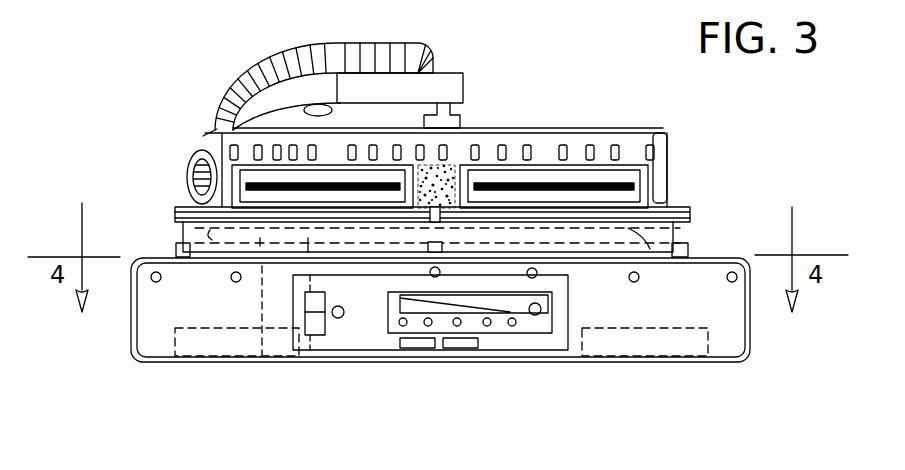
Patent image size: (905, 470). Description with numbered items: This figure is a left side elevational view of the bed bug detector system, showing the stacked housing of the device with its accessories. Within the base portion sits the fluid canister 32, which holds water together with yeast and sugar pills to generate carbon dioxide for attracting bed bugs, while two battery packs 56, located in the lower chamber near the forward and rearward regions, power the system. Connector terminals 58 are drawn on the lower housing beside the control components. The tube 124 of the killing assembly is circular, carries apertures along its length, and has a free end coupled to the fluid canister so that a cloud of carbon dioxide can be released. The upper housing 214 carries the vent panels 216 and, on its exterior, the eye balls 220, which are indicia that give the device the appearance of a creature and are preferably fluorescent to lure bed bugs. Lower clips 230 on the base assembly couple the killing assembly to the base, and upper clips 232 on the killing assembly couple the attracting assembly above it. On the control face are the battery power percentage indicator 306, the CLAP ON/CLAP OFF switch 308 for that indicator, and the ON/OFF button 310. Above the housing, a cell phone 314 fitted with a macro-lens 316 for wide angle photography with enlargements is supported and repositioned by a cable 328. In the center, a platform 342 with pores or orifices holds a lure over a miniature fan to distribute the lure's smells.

The fluid canister 32 is at (280, 302).
The battery packs 56 is at (238, 354).
The connector terminals 58 is at (465, 348).
The tube 124 is at (635, 232).
The upper housing 214 is at (635, 186).
The vent panels 216 is at (463, 158).
The eye balls 220 is at (186, 172).
The lower clips 230 is at (173, 243).
The upper clips 232 is at (170, 210).
The battery power percentage indicator 306 is at (495, 328).
The CLAP ON/CLAP OFF switch 308 is at (338, 319).
The ON/OFF button 310 is at (317, 336).
The cell phone 314 is at (467, 87).
The macro-lens 316 is at (458, 118).
The cable 328 is at (230, 112).
The platform 342 is at (556, 130).